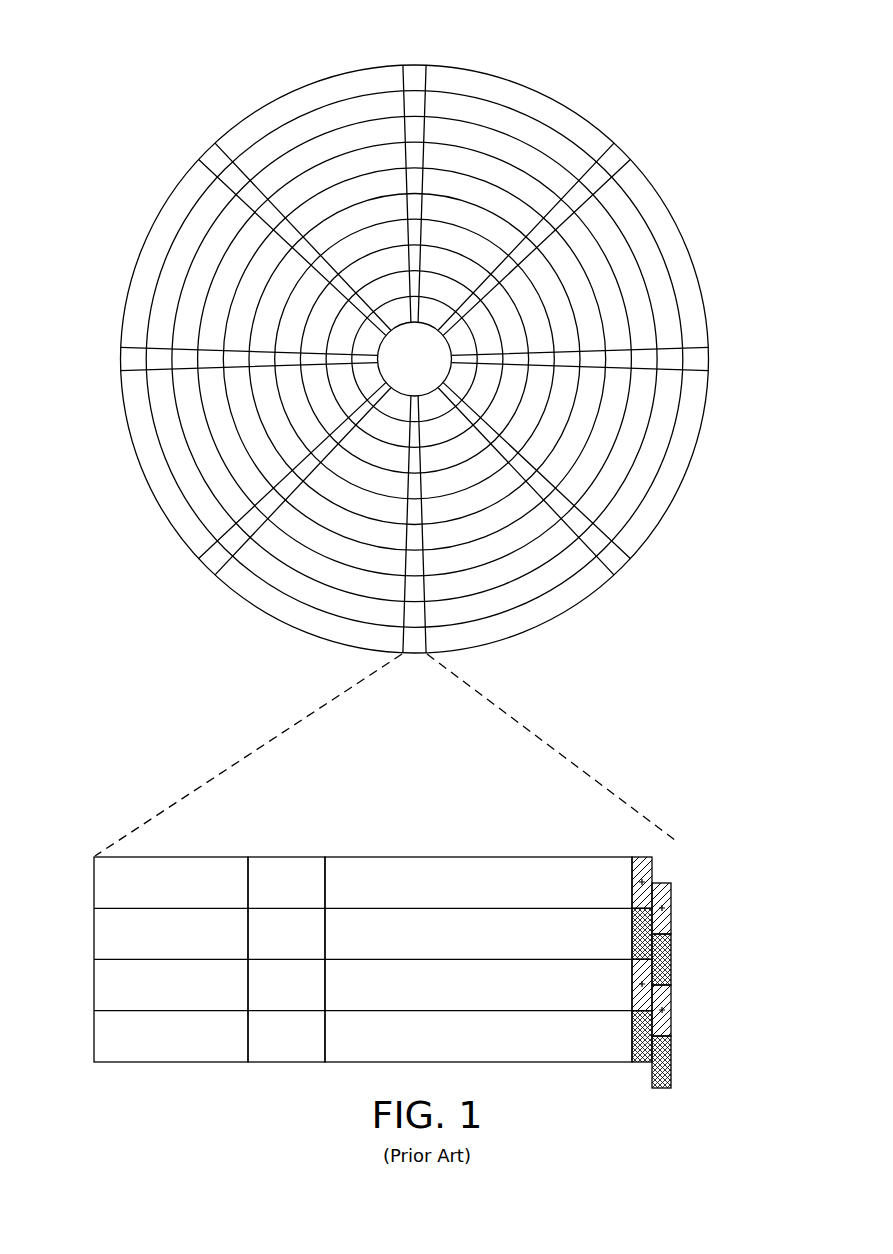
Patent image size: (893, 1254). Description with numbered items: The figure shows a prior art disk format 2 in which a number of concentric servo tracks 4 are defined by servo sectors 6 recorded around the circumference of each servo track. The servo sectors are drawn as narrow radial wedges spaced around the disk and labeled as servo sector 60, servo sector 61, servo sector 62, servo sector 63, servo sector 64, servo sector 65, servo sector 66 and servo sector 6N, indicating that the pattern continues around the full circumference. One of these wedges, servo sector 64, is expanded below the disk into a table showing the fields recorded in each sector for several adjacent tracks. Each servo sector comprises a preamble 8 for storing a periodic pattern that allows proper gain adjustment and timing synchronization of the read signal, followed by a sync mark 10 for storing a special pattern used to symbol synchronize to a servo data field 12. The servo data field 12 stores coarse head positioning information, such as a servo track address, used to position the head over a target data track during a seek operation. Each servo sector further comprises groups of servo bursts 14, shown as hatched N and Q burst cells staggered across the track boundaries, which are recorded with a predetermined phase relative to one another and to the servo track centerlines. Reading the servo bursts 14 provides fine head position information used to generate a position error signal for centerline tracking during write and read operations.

The disk format 2 is at (414, 368).
The servo tracks 4 is at (515, 124).
The servo sectors 6 is at (414, 368).
The servo sector 60 is at (416, 73).
The servo sector 61 is at (620, 157).
The servo sector 62 is at (700, 360).
The servo sector 63 is at (613, 560).
The servo sector 64 is at (284, 720).
The servo sector 65 is at (212, 563).
The servo sector 66 is at (125, 358).
The servo sector 6N is at (269, 219).
The preamble 8 is at (178, 857).
The sync mark 10 is at (288, 857).
The servo data field 12 is at (467, 857).
The servo bursts 14 is at (668, 855).